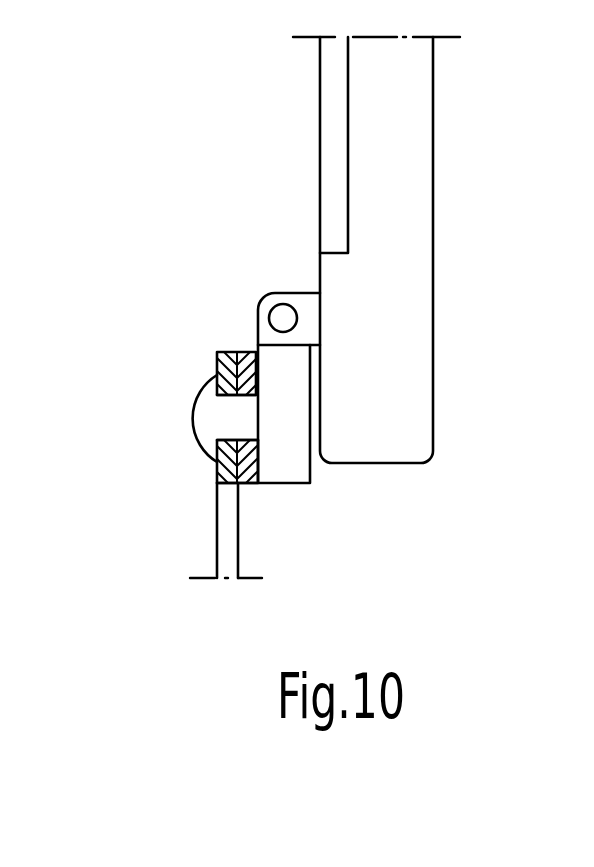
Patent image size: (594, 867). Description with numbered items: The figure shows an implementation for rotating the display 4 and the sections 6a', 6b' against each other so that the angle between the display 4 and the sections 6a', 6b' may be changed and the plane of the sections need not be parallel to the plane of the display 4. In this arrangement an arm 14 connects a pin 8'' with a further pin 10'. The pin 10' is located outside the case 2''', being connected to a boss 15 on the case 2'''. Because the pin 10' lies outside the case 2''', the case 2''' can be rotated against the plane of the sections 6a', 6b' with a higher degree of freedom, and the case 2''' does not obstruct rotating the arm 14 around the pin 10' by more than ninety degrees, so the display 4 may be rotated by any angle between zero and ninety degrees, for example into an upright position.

The display 4 is at (284, 96).
The case 2''' is at (440, 250).
The boss 15 is at (305, 300).
The pin 10' is at (232, 272).
The arm 14 is at (280, 465).
The section 6b' is at (171, 383).
The pin 8'' is at (169, 420).
The section 6a' is at (159, 537).